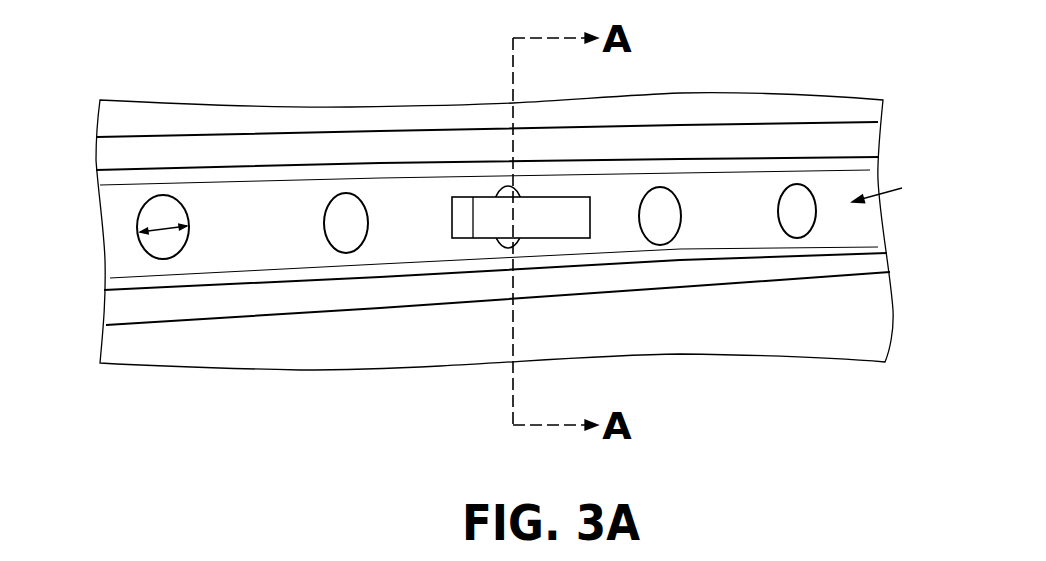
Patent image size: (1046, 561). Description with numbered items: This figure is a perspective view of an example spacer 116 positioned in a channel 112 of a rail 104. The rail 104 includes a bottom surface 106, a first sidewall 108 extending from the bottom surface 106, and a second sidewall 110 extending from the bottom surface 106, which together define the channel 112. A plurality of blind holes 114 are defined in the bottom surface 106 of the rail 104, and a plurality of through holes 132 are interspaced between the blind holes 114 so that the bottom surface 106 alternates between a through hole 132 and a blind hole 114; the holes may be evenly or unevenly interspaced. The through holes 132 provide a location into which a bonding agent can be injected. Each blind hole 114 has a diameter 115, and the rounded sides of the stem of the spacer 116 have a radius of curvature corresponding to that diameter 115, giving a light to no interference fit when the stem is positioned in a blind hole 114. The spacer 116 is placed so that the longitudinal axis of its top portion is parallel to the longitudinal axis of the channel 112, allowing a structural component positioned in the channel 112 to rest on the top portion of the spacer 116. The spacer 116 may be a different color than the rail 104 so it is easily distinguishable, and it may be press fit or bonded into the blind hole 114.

The rail 104 is at (814, 77).
The bottom surface 106 is at (245, 227).
The first sidewall 108 is at (312, 118).
The second sidewall 110 is at (283, 355).
The channel 112 is at (896, 190).
The blind holes 114 is at (137, 212).
The diameter 115 is at (160, 230).
The spacer 116 is at (485, 213).
The through holes 132 is at (347, 240).